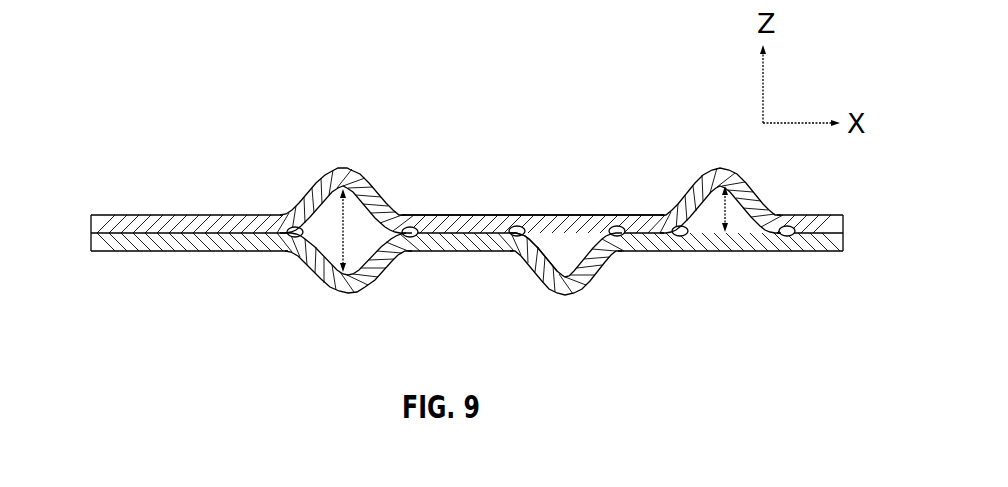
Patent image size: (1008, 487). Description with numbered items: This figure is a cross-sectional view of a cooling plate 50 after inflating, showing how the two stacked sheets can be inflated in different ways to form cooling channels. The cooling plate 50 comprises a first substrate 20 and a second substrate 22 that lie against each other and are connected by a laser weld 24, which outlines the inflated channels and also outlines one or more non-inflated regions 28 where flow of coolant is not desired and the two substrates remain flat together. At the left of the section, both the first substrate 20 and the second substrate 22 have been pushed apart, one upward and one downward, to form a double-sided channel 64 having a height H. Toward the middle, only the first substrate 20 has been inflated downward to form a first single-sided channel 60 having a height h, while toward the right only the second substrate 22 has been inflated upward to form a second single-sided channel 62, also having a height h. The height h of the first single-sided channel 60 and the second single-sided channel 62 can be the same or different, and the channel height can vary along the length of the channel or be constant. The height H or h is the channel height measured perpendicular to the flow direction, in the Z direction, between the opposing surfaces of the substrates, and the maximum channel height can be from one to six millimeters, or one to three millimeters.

The cooling plate 50 is at (132, 156).
The second substrate 22 is at (326, 182).
The first substrate 20 is at (318, 289).
The double-sided channel 64 is at (364, 206).
The non-inflated region 28 is at (485, 215).
The laser weld 24 is at (520, 232).
The first single-sided channel 60 is at (562, 267).
The second single-sided channel 62 is at (692, 195).
The height of double-sided channel H is at (352, 247).
The height of single-sided channel h is at (742, 197).